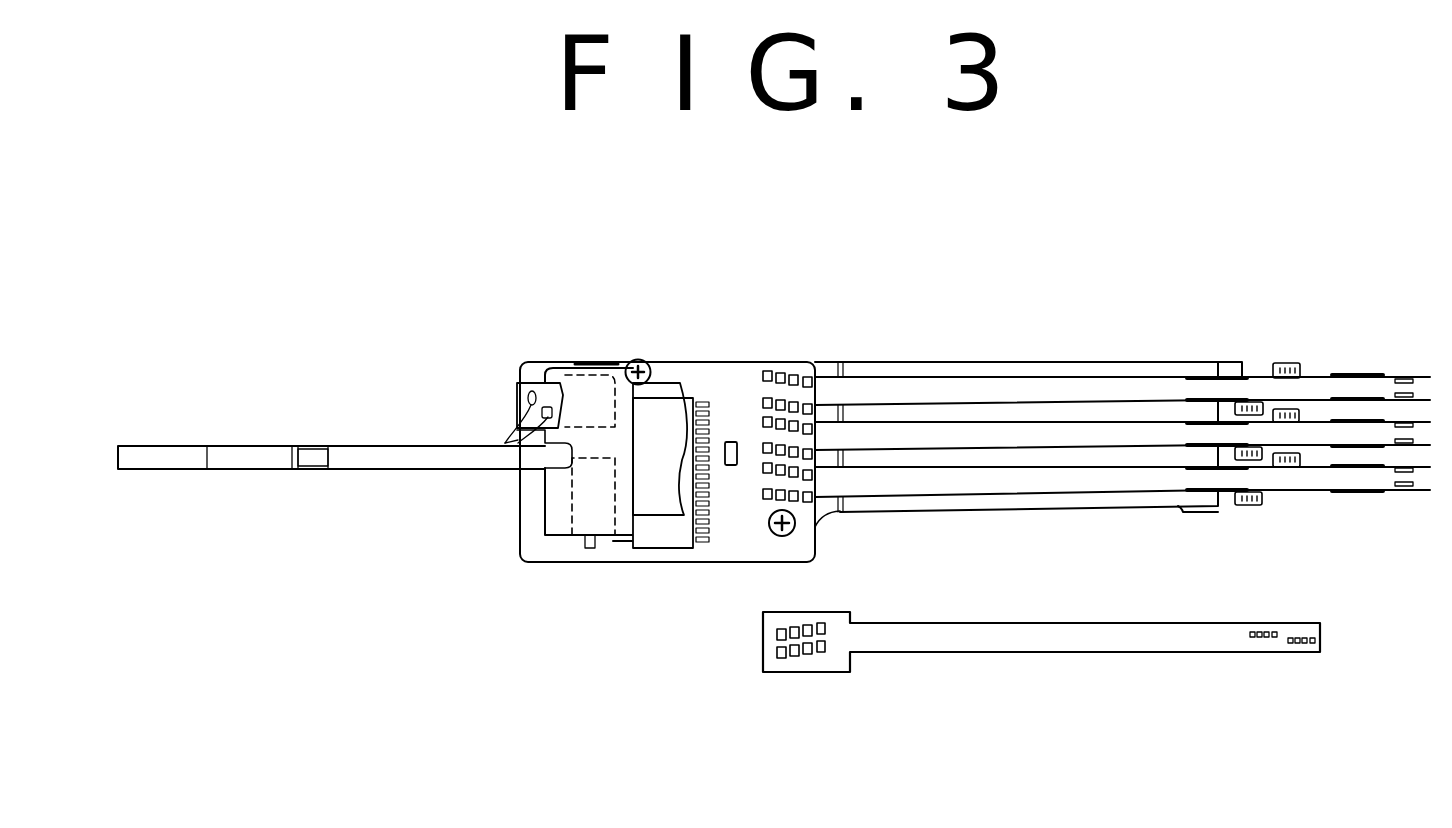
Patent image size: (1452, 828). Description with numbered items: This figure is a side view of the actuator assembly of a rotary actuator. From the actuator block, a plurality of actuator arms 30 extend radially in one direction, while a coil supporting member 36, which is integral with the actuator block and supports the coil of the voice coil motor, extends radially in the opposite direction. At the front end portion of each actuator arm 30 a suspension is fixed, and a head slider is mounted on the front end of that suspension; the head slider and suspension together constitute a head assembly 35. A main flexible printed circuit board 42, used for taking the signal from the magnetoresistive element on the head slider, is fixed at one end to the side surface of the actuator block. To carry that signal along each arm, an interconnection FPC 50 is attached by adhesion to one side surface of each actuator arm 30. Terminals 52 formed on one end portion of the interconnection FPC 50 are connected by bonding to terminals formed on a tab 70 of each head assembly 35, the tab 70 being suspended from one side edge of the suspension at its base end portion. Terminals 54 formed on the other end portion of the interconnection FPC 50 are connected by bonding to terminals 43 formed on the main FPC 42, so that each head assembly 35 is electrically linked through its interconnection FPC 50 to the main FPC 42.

The actuator arms 30 is at (1028, 412).
The head assembly 35 is at (1350, 398).
The coil supporting member 36 is at (385, 455).
The main flexible printed circuit board 42 is at (704, 370).
The terminals 43 is at (807, 385).
The interconnection FPC 50 is at (1072, 645).
The terminals 52 is at (1260, 640).
The terminals 54 is at (780, 658).
The tab 70 is at (1285, 363).